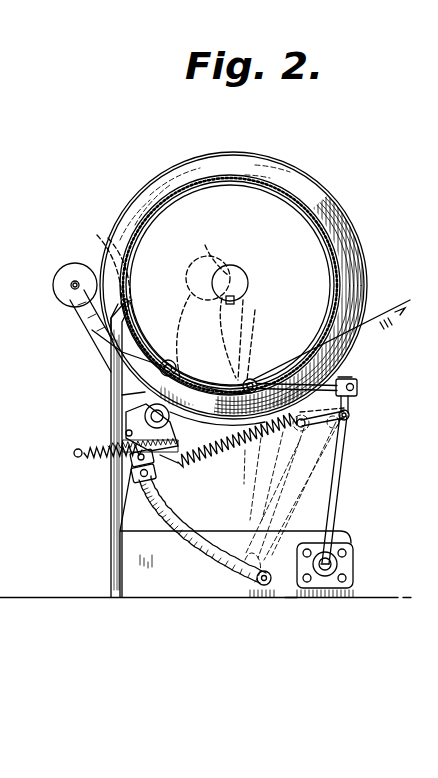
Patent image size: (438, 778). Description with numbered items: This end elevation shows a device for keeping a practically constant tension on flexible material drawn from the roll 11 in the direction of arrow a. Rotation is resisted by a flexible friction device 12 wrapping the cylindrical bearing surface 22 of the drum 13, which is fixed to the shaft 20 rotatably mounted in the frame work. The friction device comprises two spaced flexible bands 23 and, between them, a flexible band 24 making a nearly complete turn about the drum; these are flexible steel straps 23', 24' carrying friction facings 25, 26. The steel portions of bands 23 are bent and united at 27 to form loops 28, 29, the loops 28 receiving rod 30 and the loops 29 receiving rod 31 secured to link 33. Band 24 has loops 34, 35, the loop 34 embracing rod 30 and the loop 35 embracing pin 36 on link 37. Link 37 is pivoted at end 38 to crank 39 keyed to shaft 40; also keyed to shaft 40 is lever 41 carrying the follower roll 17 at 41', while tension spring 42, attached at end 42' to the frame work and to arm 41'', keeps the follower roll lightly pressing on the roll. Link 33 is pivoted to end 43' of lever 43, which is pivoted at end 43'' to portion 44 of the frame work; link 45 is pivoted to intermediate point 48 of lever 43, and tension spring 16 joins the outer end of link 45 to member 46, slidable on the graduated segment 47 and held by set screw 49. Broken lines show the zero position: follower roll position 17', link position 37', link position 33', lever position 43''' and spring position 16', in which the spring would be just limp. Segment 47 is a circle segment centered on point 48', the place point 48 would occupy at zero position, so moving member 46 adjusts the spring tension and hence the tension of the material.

The roll of material 11 is at (271, 162).
The flexible friction device 12 is at (378, 201).
The drum 13 is at (200, 203).
The tension spring 16 is at (237, 443).
The spring position 16' is at (264, 492).
The follower roll 17 is at (57, 282).
The follower roll position 17' is at (208, 261).
The shaft 20 is at (244, 272).
The cylindrical bearing surface 22 is at (325, 242).
The flexible bands 23 is at (230, 258).
The flexible steel straps 23' is at (264, 285).
The flexible band 24 is at (217, 344).
The flexible steel strap 24' is at (147, 283).
The facings 25 is at (289, 204).
The facing 26 is at (215, 378).
The united ends 27 is at (140, 333).
The loops 28 is at (126, 385).
The loops 29 is at (340, 378).
The rod 30 is at (160, 368).
The rod 31 is at (217, 424).
The link 33 is at (369, 393).
The link position 33' is at (267, 339).
The loop 34 is at (120, 400).
The loop 35 is at (128, 296).
The pin 36 is at (128, 306).
The link 37 is at (106, 348).
The link position 37' is at (94, 267).
The end of link 38 is at (120, 436).
The crank 39 is at (126, 428).
The shaft 40 is at (172, 421).
The lever 41 is at (71, 337).
The follower roll pivot 41' is at (42, 296).
The arm of lever 41'' is at (193, 472).
The tension spring 42 is at (117, 465).
The spring end 42' is at (49, 462).
The lever 43 is at (355, 489).
The end of lever 43' is at (370, 384).
The pivot end of lever 43'' is at (353, 565).
The lever position 43''' is at (334, 488).
The portion of frame work 44 is at (307, 598).
The link 45 is at (322, 422).
The member 46 is at (140, 482).
The graduated segment 47 is at (165, 530).
The intermediate point of lever 48 is at (366, 421).
The zero position point 48' is at (351, 418).
The set screw 49 is at (136, 468).
The arrow a is at (331, 340).